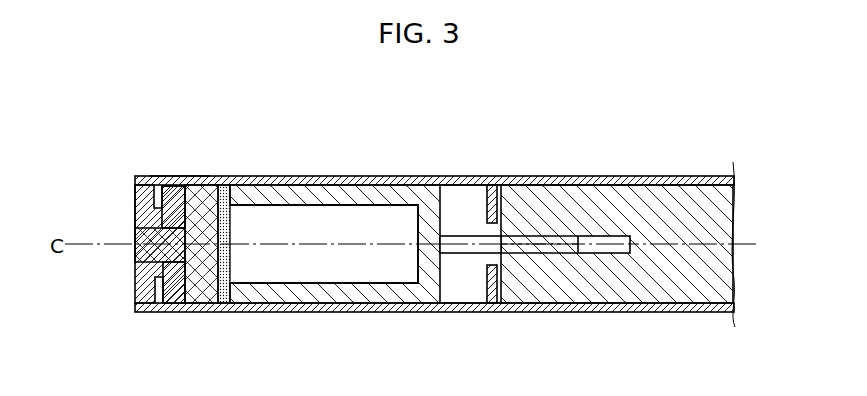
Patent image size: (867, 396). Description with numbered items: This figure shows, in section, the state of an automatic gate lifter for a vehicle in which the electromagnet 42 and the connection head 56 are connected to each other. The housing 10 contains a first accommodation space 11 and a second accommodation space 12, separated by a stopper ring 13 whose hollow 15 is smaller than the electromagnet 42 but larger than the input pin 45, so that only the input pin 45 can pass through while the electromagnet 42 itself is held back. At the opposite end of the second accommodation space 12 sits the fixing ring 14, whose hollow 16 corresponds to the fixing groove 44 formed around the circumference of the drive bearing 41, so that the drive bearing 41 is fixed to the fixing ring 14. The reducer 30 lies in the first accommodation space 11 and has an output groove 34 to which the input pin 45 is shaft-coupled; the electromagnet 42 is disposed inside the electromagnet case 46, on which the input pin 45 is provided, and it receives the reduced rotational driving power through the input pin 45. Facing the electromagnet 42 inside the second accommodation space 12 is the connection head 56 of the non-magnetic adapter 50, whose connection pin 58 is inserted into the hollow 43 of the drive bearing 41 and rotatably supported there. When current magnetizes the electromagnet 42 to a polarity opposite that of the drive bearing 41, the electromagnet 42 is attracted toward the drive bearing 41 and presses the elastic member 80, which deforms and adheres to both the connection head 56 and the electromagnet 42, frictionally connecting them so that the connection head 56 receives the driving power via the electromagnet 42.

The housing 10 is at (406, 141).
The first accommodation space 11 is at (670, 177).
The second accommodation space 12 is at (457, 185).
The stopper ring 13 is at (492, 283).
The fixing ring 14 is at (153, 205).
The hollow 15 is at (489, 187).
The hollow 16 is at (140, 203).
The reducer 30 is at (605, 208).
The output groove 34 is at (607, 253).
The drive bearing 41 is at (140, 290).
The electromagnet 42 is at (327, 257).
The hollow 43 is at (175, 275).
The fixing groove 44 is at (176, 176).
The input pin 45 is at (455, 253).
The electromagnet case 46 is at (370, 297).
The adapter 50 is at (126, 231).
The connection head 56 is at (204, 200).
The connection pin 58 is at (135, 252).
The elastic member 80 is at (224, 300).